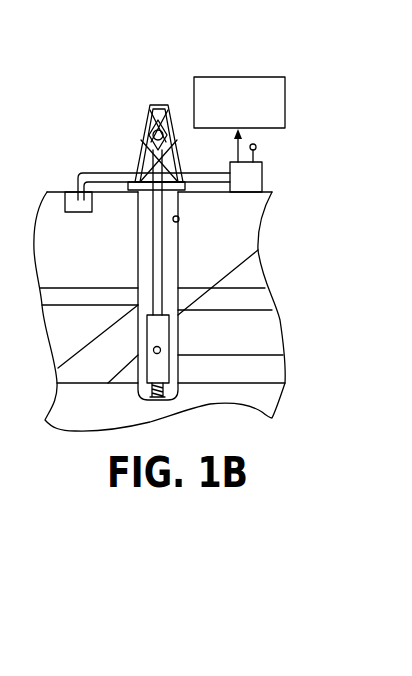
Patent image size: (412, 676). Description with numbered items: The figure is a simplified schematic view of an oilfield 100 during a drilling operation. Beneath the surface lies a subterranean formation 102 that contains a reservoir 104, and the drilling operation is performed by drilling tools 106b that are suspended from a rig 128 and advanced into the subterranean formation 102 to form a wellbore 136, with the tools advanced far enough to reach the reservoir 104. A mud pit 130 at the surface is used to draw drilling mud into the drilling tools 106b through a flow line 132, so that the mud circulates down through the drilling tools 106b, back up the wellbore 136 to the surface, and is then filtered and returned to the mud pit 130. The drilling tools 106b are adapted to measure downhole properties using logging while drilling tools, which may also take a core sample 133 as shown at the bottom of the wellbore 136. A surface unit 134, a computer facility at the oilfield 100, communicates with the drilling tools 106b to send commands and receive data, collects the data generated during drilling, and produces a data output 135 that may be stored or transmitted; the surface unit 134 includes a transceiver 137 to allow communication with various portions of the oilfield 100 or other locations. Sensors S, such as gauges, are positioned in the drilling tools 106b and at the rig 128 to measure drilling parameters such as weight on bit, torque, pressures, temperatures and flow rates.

The oilfield 100 is at (87, 102).
The subterranean formation 102 is at (191, 281).
The reservoir 104 is at (250, 348).
The drilling tools 106b is at (139, 346).
The rig 128 is at (141, 143).
The mud pit 130 is at (78, 212).
The flow line 132 is at (76, 181).
The core sample 133 is at (142, 393).
The surface unit 134 is at (262, 180).
The data output 135 is at (243, 77).
The wellbore 136 is at (182, 220).
The transceiver 137 is at (258, 153).
The sensor S is at (150, 128).